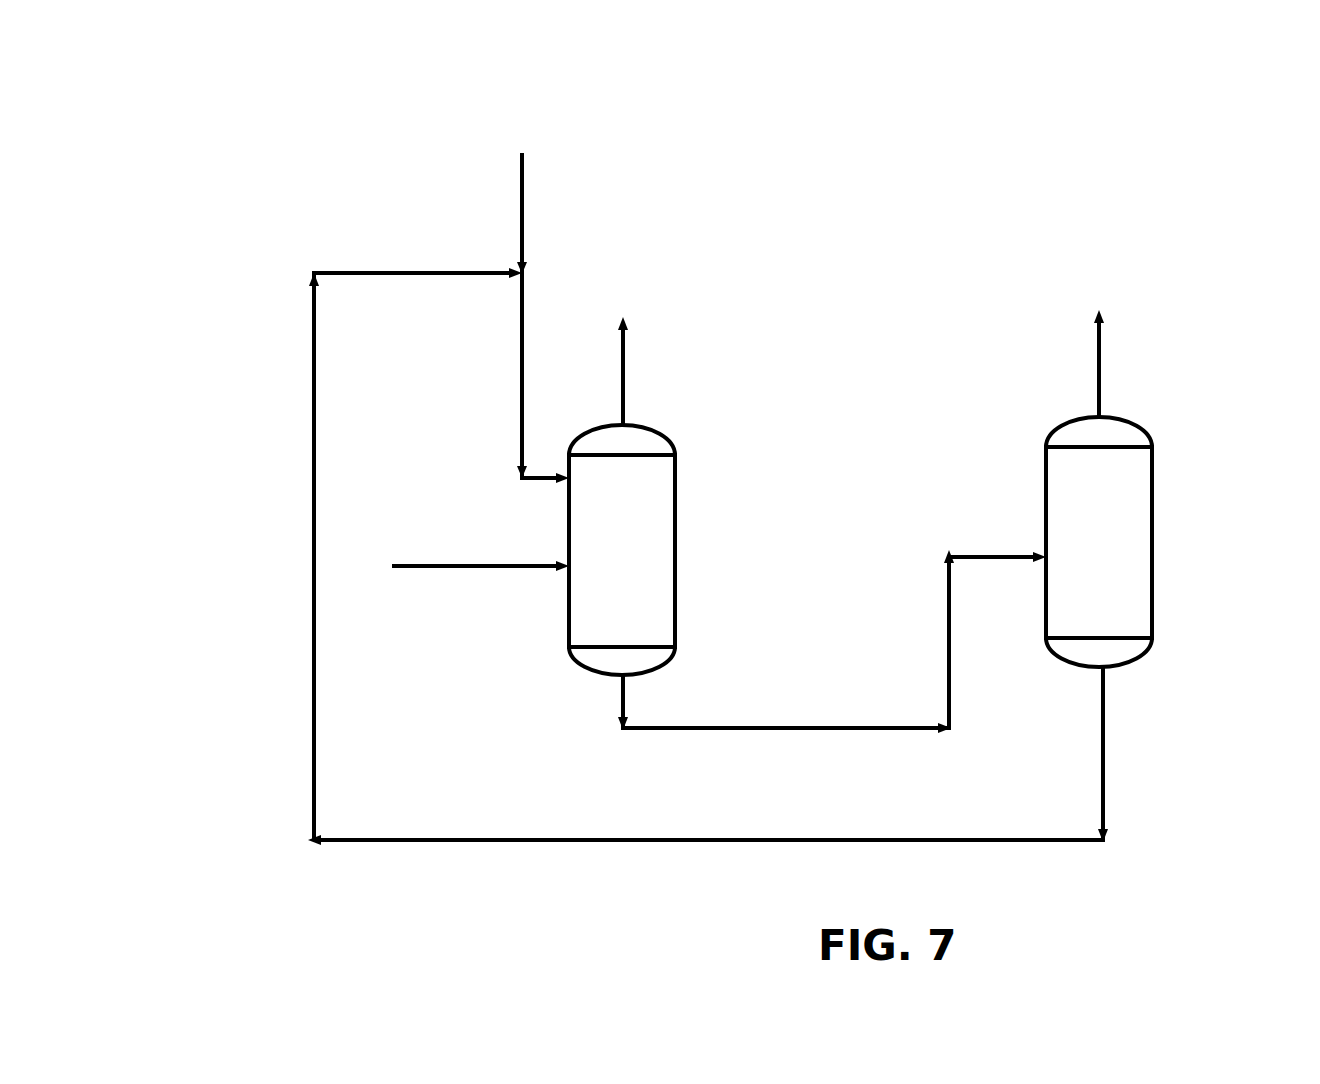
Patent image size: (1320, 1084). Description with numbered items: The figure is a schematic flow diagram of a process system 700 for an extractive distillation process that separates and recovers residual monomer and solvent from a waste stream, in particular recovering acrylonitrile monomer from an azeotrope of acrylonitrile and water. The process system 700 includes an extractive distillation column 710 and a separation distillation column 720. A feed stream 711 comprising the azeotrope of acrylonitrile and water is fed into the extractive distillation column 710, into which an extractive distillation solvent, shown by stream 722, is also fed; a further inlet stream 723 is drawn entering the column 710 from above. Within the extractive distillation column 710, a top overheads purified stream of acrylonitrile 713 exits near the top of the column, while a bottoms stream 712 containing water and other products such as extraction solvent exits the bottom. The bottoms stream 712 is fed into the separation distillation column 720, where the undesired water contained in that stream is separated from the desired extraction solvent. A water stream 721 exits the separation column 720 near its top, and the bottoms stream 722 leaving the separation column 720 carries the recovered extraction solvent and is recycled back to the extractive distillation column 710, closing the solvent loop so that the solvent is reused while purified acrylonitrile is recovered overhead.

The process system 700 is at (853, 112).
The extractive distillation column 710 is at (594, 573).
The feed stream 711 is at (473, 562).
The bottoms stream 712 is at (820, 728).
The top overheads purified stream of acrylonitrile 713 is at (625, 373).
The separation distillation column 720 is at (1071, 561).
The water stream 721 is at (1105, 380).
The bottoms stream 722 is at (377, 280).
The feed stream 723 is at (525, 228).